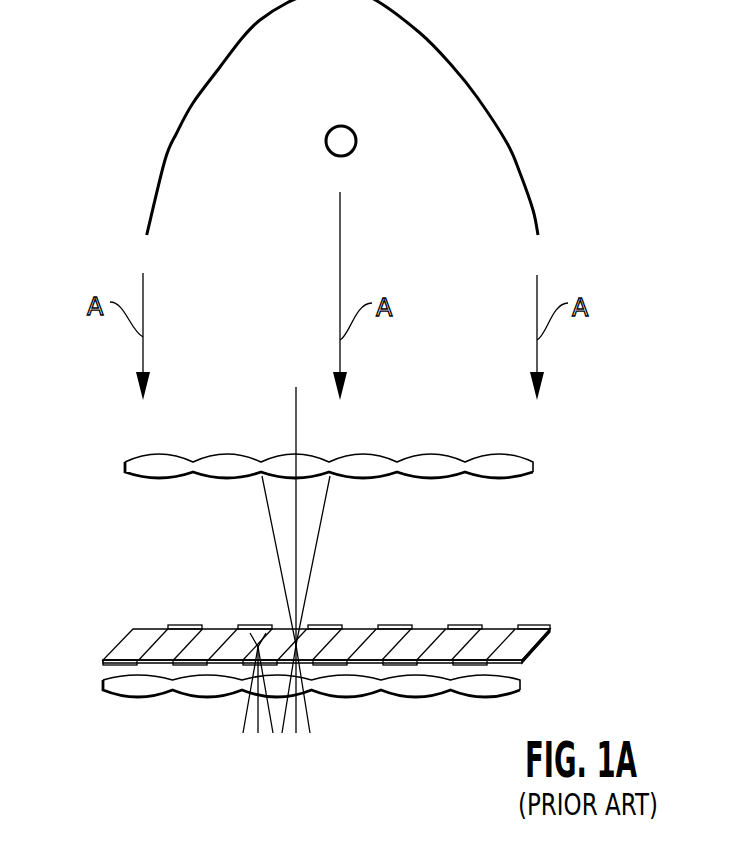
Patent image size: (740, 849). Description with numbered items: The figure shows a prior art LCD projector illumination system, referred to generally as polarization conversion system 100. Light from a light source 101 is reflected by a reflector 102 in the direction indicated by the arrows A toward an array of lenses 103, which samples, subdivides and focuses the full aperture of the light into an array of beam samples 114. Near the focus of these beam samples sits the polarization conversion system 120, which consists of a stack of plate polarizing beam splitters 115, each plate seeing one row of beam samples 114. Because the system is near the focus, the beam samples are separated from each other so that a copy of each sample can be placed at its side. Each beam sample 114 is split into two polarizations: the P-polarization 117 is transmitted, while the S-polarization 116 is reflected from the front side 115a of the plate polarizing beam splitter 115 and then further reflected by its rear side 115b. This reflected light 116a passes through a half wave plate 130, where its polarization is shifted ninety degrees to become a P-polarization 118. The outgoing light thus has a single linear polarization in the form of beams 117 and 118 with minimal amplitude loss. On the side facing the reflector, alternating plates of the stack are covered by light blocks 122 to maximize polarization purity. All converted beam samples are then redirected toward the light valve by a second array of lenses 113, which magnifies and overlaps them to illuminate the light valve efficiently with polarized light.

The polarization conversion system 100 is at (122, 128).
The light source 101 is at (356, 140).
The reflector 102 is at (517, 167).
The array of lenses 103 is at (533, 469).
The second array of lenses 113 is at (520, 688).
The beam samples 114 is at (252, 525).
The plate polarizing beam splitter 115 is at (317, 640).
The front side of polarizing beam splitter 115a is at (308, 630).
The rear side of polarizing beam splitter 115b is at (240, 632).
The S-polarization 116 is at (283, 628).
The reflected light 116a is at (268, 643).
The P-polarization 117 is at (303, 745).
The P-polarization 118 is at (248, 748).
The polarization conversion system 120 is at (383, 652).
The light blocks 122 is at (405, 628).
The half wave plate 130 is at (258, 648).